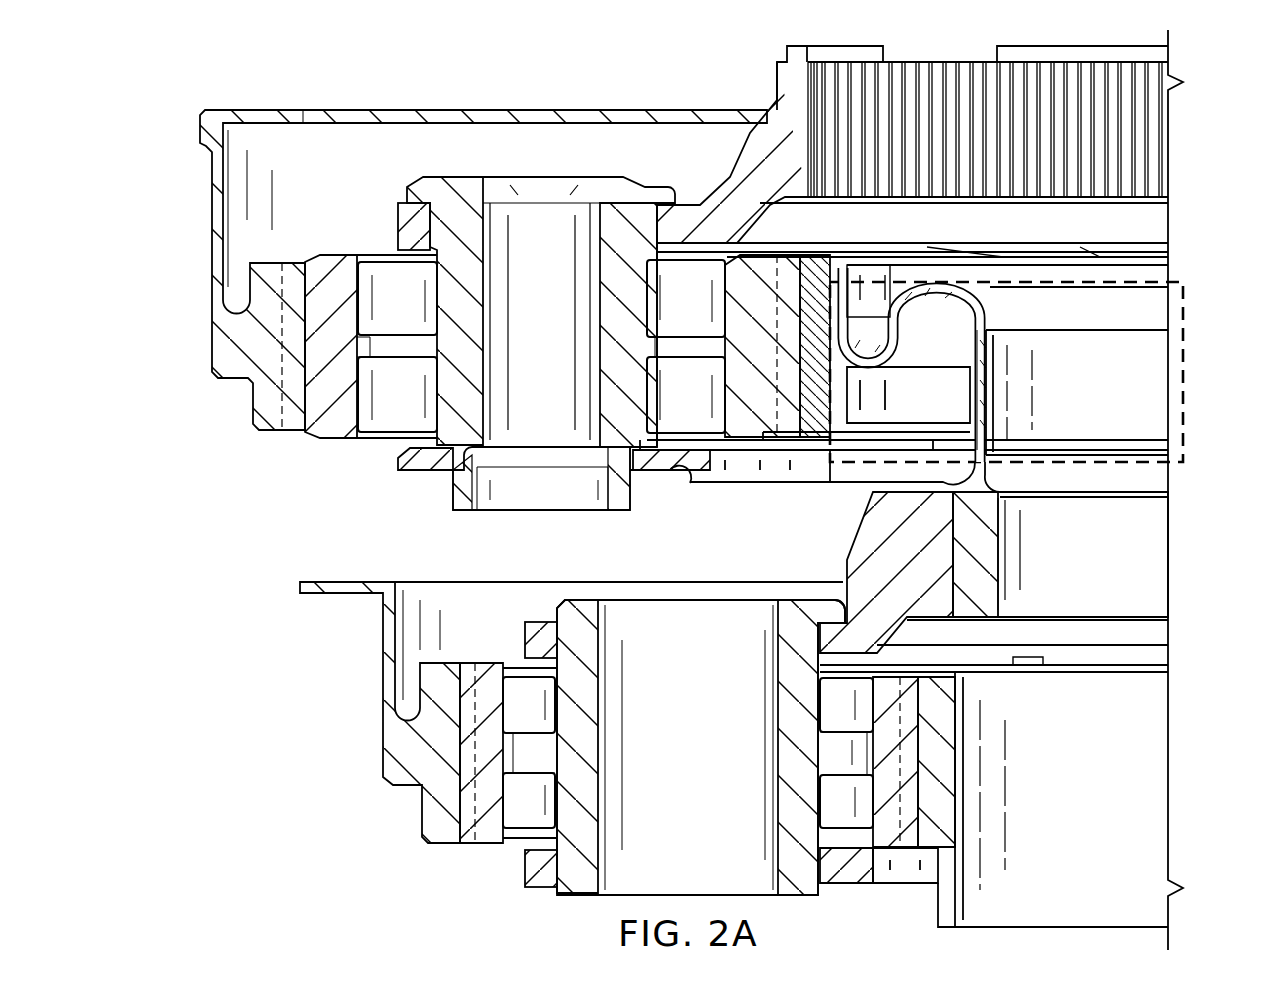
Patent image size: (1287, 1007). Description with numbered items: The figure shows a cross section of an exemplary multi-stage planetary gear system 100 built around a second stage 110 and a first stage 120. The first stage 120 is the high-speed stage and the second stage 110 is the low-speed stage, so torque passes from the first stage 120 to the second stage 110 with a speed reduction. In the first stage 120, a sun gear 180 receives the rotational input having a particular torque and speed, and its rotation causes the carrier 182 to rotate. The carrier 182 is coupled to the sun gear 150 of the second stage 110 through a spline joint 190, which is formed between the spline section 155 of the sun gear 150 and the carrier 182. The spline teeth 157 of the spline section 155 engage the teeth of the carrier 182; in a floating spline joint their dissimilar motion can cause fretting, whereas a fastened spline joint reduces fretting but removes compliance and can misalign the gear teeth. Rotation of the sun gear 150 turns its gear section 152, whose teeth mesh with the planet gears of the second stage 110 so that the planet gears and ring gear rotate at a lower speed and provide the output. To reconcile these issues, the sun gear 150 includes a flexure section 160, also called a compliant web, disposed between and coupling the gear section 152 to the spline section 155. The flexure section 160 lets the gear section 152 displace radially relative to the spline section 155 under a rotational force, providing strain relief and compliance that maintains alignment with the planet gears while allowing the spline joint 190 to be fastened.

The planetary gear system 100 is at (460, 86).
The second stage 110 is at (193, 292).
The first stage 120 is at (312, 670).
The sun gear 150 is at (1150, 388).
The gear section 152 is at (813, 275).
The spline section 155 is at (1148, 562).
The spline teeth 157 is at (965, 580).
The flexure section 160 is at (1185, 322).
The sun gear 180 is at (1150, 758).
The carrier 182 is at (887, 520).
The spline joint 190 is at (962, 530).